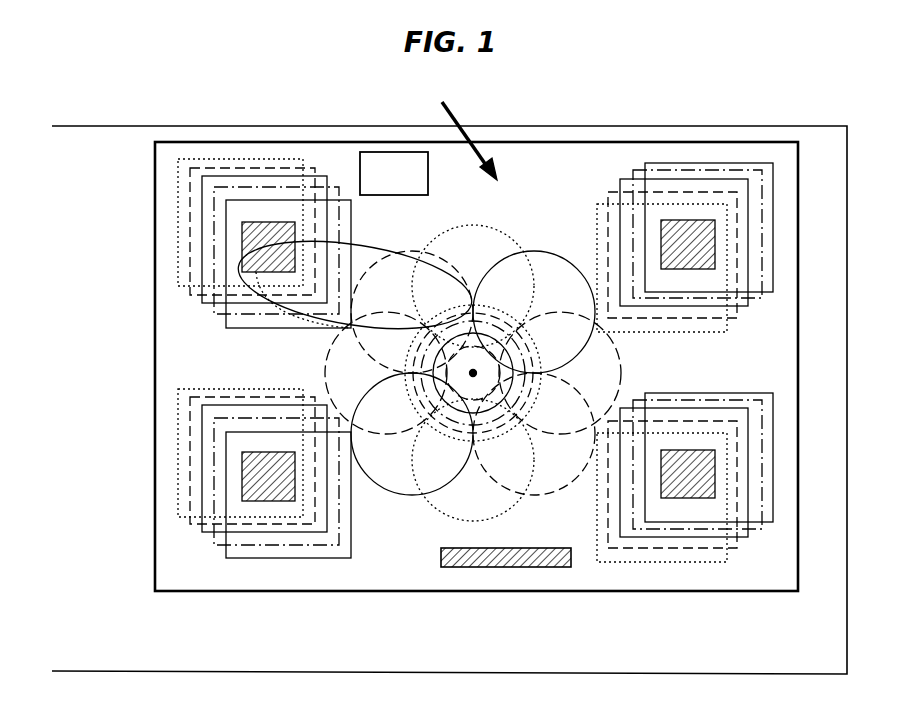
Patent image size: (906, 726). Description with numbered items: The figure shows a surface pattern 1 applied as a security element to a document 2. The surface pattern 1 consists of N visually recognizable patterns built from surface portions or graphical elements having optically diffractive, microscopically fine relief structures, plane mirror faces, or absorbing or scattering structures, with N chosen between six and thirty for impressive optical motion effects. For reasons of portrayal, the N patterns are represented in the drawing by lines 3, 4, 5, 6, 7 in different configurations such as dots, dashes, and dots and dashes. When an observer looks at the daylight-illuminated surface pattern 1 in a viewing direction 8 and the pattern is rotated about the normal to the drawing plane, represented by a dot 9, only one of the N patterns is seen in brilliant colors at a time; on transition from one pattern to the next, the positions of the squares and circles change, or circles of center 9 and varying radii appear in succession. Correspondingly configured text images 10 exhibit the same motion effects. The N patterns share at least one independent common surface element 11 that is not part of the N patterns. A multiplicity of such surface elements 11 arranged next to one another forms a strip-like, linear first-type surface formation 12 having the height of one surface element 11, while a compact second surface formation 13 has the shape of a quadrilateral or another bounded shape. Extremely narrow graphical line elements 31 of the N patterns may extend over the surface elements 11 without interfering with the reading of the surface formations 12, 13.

The surface pattern 1 is at (180, 591).
The document 2 is at (84, 636).
The line 3 is at (242, 517).
The line 4 is at (263, 524).
The line 5 is at (287, 532).
The line 6 is at (312, 545).
The line 7 is at (382, 487).
The viewing direction 8 is at (464, 129).
The dot 9 is at (473, 373).
The text image 10 is at (392, 152).
The common surface element 11 is at (672, 222).
The first-type surface formation 12 is at (505, 563).
The second surface formation 13 is at (252, 478).
The graphical line element 31 is at (267, 314).